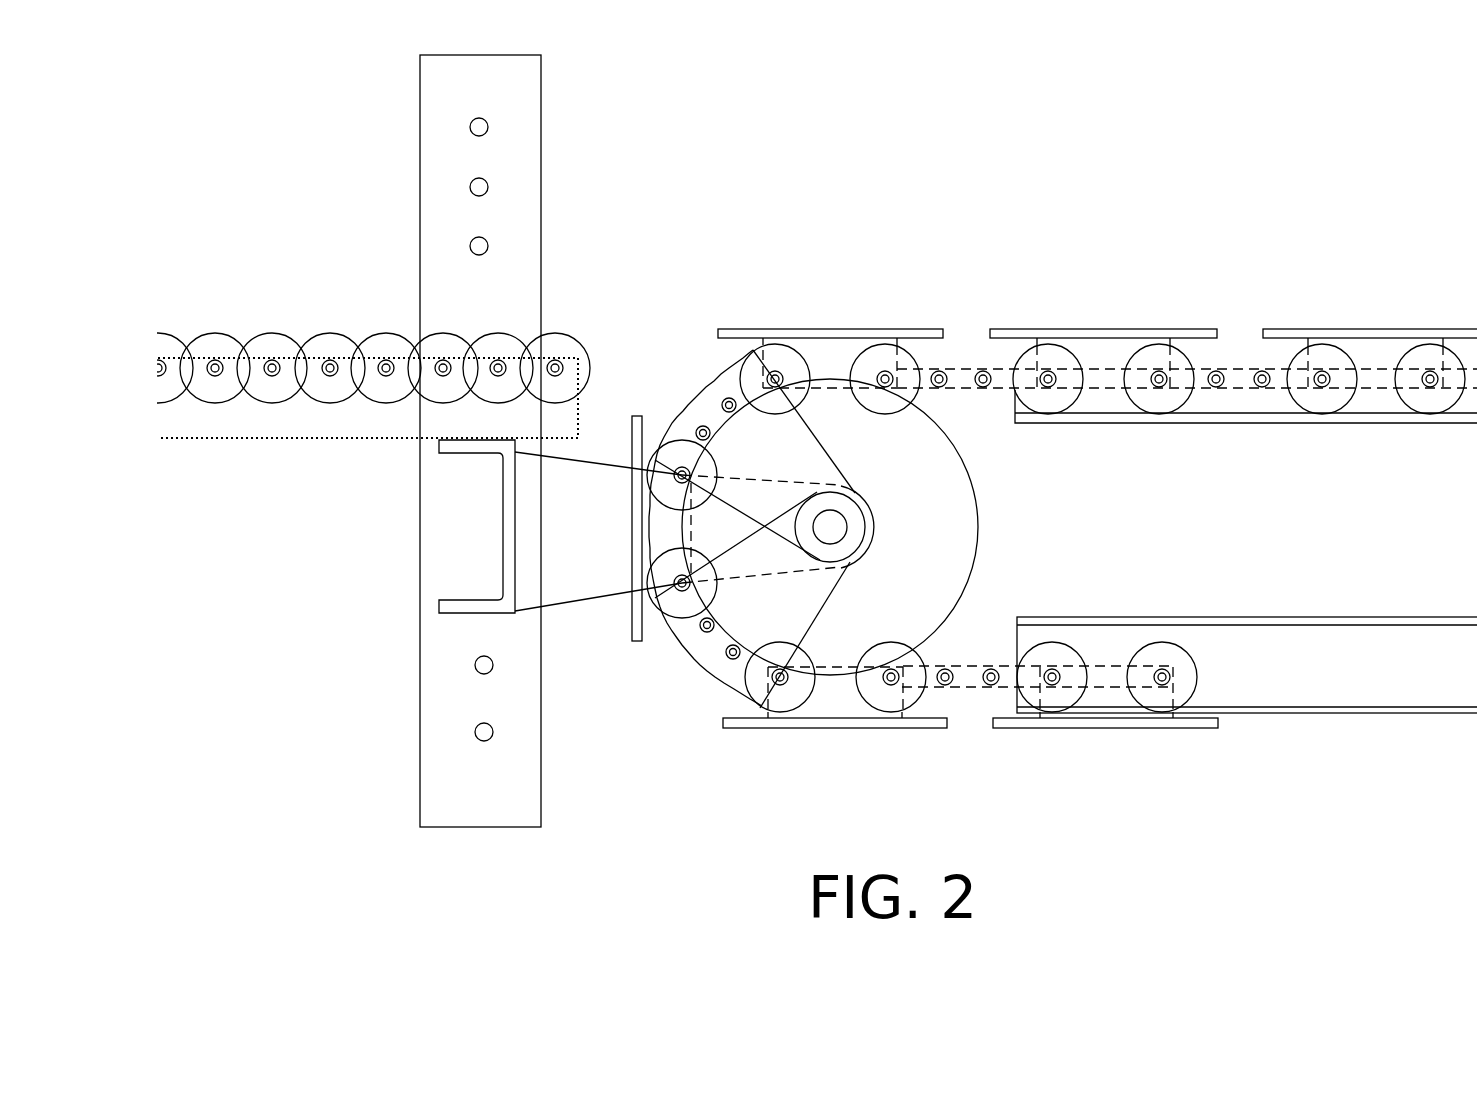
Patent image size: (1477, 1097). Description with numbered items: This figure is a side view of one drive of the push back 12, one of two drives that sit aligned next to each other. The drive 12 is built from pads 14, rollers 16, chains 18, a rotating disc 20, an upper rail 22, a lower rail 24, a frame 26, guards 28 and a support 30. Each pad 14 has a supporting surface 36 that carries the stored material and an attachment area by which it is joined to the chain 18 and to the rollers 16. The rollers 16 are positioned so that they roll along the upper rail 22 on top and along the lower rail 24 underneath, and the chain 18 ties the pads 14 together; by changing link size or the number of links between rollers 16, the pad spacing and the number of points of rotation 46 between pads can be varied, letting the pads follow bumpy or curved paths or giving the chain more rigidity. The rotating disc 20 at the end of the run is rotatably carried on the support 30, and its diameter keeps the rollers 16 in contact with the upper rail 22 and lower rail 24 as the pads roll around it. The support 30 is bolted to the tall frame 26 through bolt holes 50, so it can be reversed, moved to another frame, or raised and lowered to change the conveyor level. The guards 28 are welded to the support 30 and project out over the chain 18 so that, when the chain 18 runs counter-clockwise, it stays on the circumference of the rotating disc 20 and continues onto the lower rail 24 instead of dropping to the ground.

The drive of the push back 12 is at (832, 212).
The pad 14 is at (1108, 356).
The roller 16 is at (1157, 398).
The chain 18 is at (962, 391).
The rotating disc 20 is at (984, 538).
The upper rail 22 is at (1367, 428).
The lower rail 24 is at (1305, 612).
The frame 26 is at (545, 108).
The guard 28 is at (738, 445).
The support 30 is at (592, 574).
The supporting surface 36 is at (1093, 322).
The points of rotation 46 is at (987, 689).
The bolt holes 50 is at (488, 246).